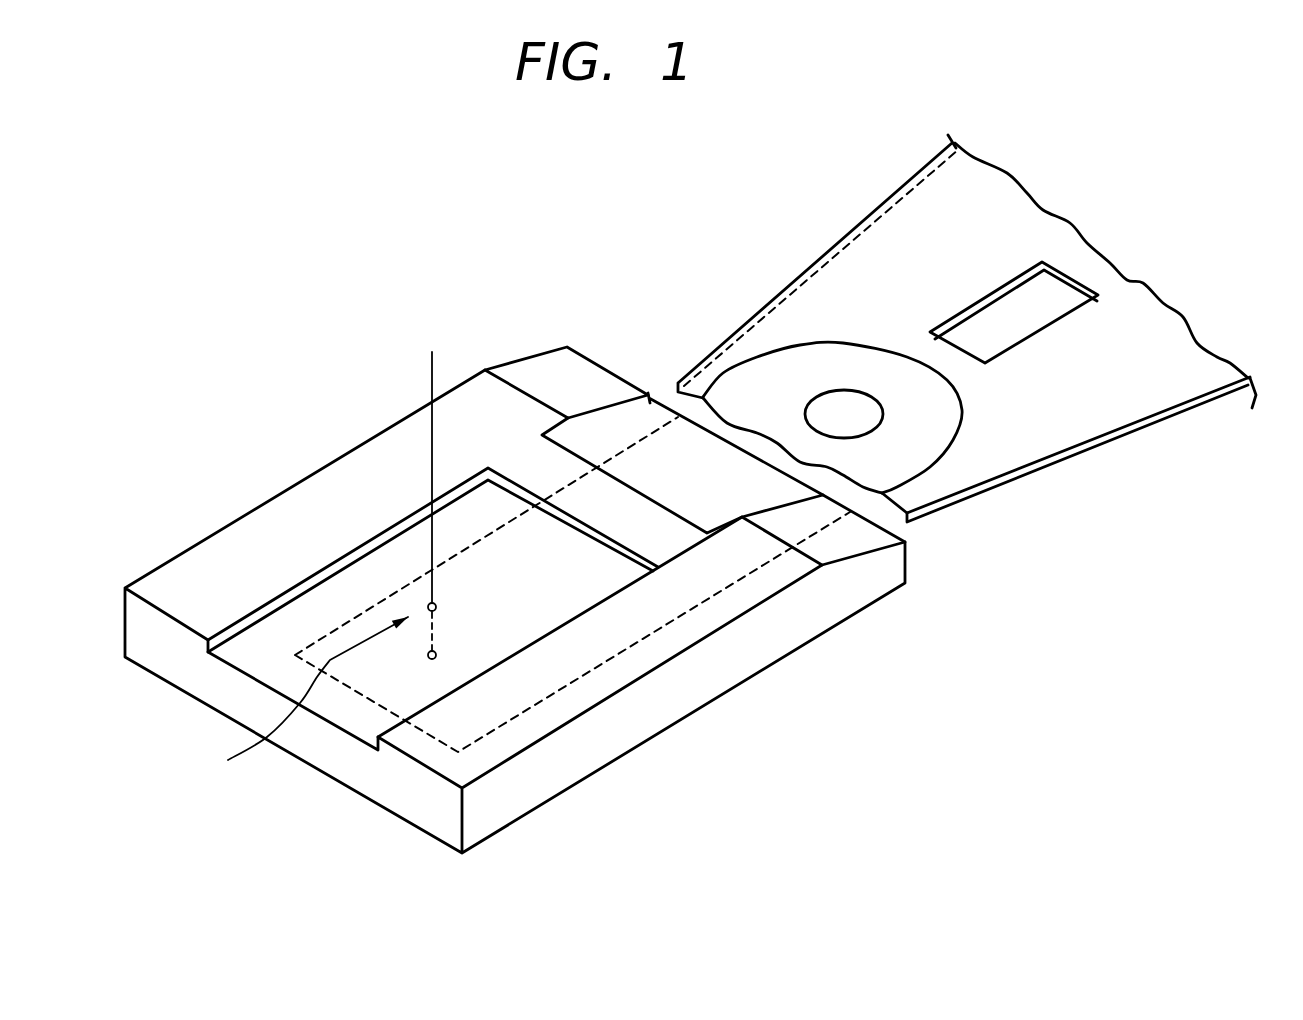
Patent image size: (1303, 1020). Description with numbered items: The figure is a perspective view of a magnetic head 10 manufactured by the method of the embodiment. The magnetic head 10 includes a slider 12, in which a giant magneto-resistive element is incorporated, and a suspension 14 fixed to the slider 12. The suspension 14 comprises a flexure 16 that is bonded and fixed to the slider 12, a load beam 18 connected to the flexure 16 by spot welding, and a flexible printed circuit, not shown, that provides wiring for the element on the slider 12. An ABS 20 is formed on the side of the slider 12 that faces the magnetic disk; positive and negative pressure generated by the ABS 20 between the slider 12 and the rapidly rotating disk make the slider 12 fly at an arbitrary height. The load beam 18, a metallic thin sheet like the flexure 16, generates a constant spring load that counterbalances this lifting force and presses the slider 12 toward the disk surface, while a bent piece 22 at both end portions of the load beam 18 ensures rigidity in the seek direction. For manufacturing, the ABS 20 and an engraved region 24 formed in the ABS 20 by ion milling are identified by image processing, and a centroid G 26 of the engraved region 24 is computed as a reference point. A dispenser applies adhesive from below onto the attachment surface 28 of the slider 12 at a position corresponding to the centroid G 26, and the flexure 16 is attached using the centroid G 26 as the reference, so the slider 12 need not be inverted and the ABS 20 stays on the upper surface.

The magnetic head 10 is at (226, 252).
The slider 12 is at (585, 752).
The suspension 14 is at (722, 278).
The flexure 16 is at (802, 372).
The load beam 18 is at (870, 262).
The ABS 20 is at (208, 570).
The bent piece 22 is at (726, 341).
The engraved region 24 is at (348, 593).
The centroid G 26 is at (299, 703).
The attachment surface 28 is at (445, 717).
The centroid G is at (432, 487).